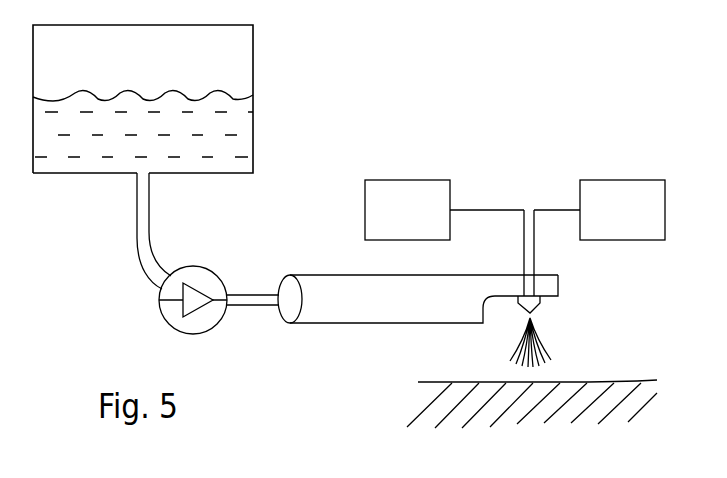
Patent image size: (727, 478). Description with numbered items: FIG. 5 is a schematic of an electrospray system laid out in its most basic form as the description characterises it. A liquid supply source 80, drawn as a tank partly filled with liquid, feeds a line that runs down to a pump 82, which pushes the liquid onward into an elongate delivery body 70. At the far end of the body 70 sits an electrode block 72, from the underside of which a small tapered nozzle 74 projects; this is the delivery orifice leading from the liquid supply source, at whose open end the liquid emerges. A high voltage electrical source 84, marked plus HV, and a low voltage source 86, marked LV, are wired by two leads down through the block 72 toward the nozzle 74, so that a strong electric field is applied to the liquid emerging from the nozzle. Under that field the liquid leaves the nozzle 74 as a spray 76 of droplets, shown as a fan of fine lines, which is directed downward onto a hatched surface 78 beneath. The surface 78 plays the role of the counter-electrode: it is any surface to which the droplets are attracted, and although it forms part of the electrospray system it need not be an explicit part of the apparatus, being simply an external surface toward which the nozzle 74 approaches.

The dispensing head body 70 is at (313, 276).
The electrode block 72 is at (590, 289).
The nozzle 74 is at (538, 309).
The spray 76 is at (573, 353).
The substrate 78 is at (434, 381).
The liquid reservoir 80 is at (253, 107).
The pump 82 is at (200, 267).
The high voltage source 84 is at (620, 180).
The low voltage source 86 is at (422, 180).